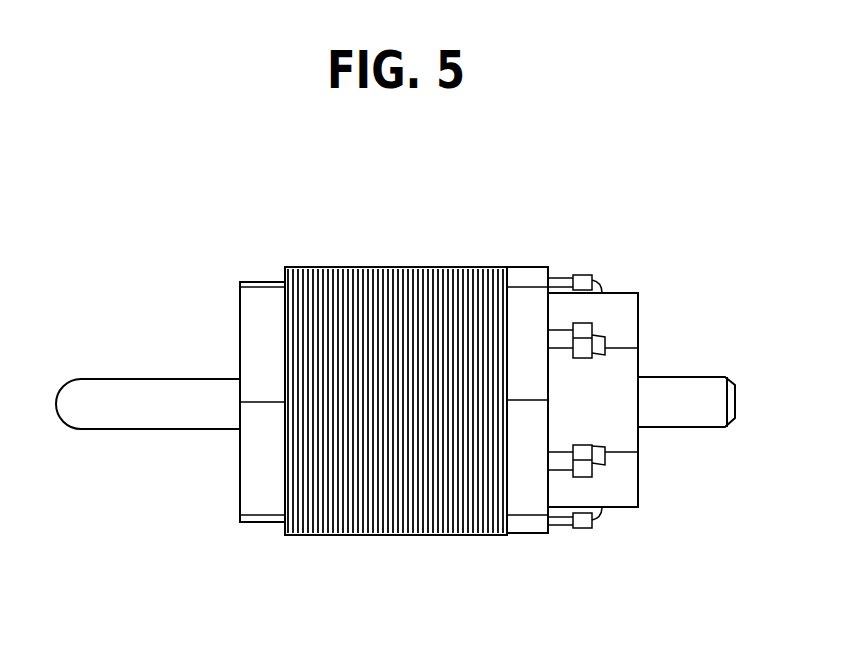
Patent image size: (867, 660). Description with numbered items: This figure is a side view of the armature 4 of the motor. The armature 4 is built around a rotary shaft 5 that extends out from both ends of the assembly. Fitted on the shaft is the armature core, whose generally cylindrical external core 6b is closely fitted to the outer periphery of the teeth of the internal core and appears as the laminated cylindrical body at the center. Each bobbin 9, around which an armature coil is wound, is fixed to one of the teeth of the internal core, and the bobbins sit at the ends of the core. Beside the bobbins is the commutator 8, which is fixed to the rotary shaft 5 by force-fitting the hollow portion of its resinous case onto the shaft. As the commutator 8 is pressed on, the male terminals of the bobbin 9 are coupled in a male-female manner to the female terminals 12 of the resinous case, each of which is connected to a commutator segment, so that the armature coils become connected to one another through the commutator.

The armature 4 is at (504, 241).
The rotary shaft 5 is at (167, 418).
The external core 6b is at (400, 520).
The bobbin 9 is at (263, 282).
The commutator 8 is at (628, 512).
The female terminal 12 is at (588, 530).